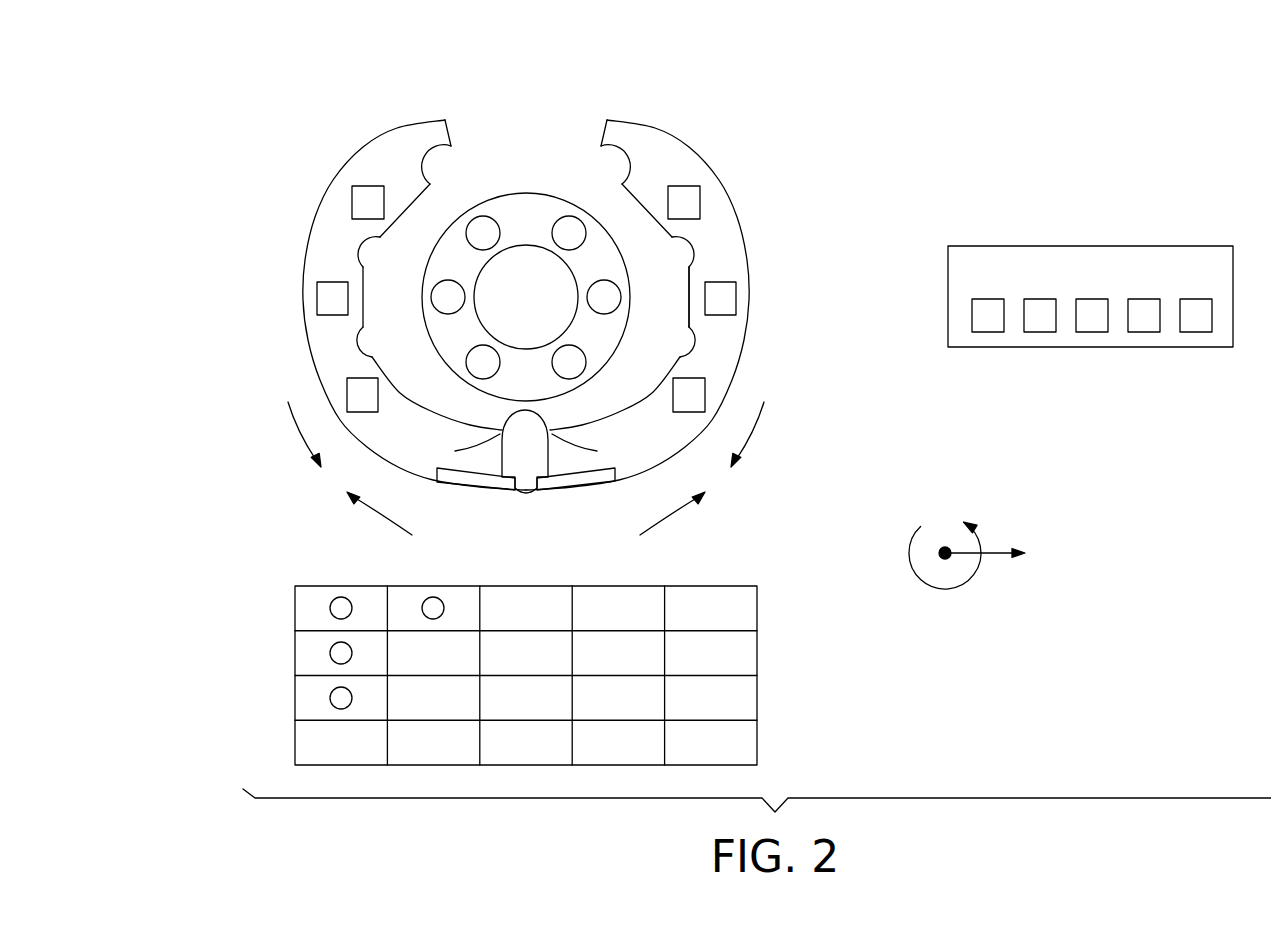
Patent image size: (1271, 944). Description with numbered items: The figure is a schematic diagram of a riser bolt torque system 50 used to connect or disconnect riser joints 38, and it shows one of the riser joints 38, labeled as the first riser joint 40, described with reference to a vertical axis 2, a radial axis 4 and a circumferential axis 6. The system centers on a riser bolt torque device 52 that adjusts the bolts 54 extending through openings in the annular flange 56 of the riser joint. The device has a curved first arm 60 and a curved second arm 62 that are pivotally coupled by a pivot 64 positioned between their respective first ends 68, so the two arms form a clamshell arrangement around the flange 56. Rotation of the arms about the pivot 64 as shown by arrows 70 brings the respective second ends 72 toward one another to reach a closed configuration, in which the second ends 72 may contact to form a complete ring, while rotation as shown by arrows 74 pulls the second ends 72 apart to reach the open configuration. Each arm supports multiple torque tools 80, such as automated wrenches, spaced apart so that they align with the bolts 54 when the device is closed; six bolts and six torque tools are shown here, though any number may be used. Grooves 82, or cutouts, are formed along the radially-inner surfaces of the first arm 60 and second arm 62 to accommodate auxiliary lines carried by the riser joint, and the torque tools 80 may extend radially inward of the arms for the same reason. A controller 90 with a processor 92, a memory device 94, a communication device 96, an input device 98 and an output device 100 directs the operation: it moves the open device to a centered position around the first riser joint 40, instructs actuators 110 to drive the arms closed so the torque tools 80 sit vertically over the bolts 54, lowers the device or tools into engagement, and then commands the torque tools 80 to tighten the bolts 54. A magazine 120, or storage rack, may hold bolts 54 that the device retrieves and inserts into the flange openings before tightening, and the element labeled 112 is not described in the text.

The vertical axis 2 is at (944, 549).
The radial axis 4 is at (995, 552).
The circumferential axis 6 is at (967, 582).
The riser joint 38 is at (525, 380).
The first riser joint 40 is at (525, 392).
The riser bolt torque system 50 is at (1071, 346).
The riser bolt torque device 52 is at (525, 392).
The bolts 54 is at (493, 233).
The flange 56 is at (450, 226).
The first arm 60 is at (368, 156).
The second arm 62 is at (684, 156).
The pivot 64 is at (526, 450).
The first ends 68 is at (525, 448).
The arrows 70 is at (383, 520).
The second ends 72 is at (451, 138).
The arrows 74 is at (297, 432).
The torque tools 80 is at (352, 200).
The grooves 82 is at (444, 168).
The controller 90 is at (1090, 304).
The processor 92 is at (988, 332).
The memory device 94 is at (1040, 332).
The communication device 96 is at (1092, 332).
The input device 98 is at (1144, 332).
The output device 100 is at (1196, 332).
The actuators 110 is at (478, 487).
The inner surface 112 is at (680, 292).
The magazine 120 is at (293, 700).